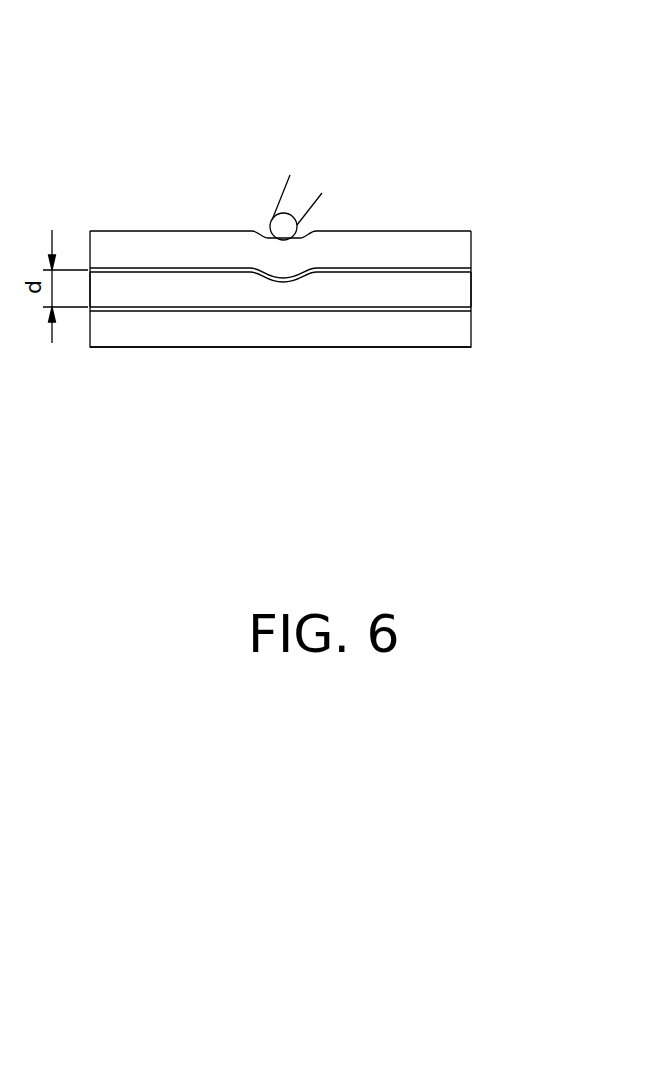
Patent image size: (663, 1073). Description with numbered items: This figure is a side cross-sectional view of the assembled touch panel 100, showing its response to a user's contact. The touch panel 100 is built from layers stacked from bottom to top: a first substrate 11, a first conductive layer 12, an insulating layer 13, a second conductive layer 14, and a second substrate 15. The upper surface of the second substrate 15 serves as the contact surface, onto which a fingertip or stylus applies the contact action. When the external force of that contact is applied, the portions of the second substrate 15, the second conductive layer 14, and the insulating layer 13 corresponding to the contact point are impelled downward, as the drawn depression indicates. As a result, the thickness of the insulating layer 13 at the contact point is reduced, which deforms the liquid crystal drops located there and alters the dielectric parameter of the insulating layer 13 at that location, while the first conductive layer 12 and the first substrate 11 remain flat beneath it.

The touch panel 100 is at (307, 57).
The second substrate 15 is at (462, 247).
The second conductive layer 14 is at (470, 268).
The insulating layer 13 is at (462, 286).
The first conductive layer 12 is at (470, 307).
The first substrate 11 is at (462, 337).